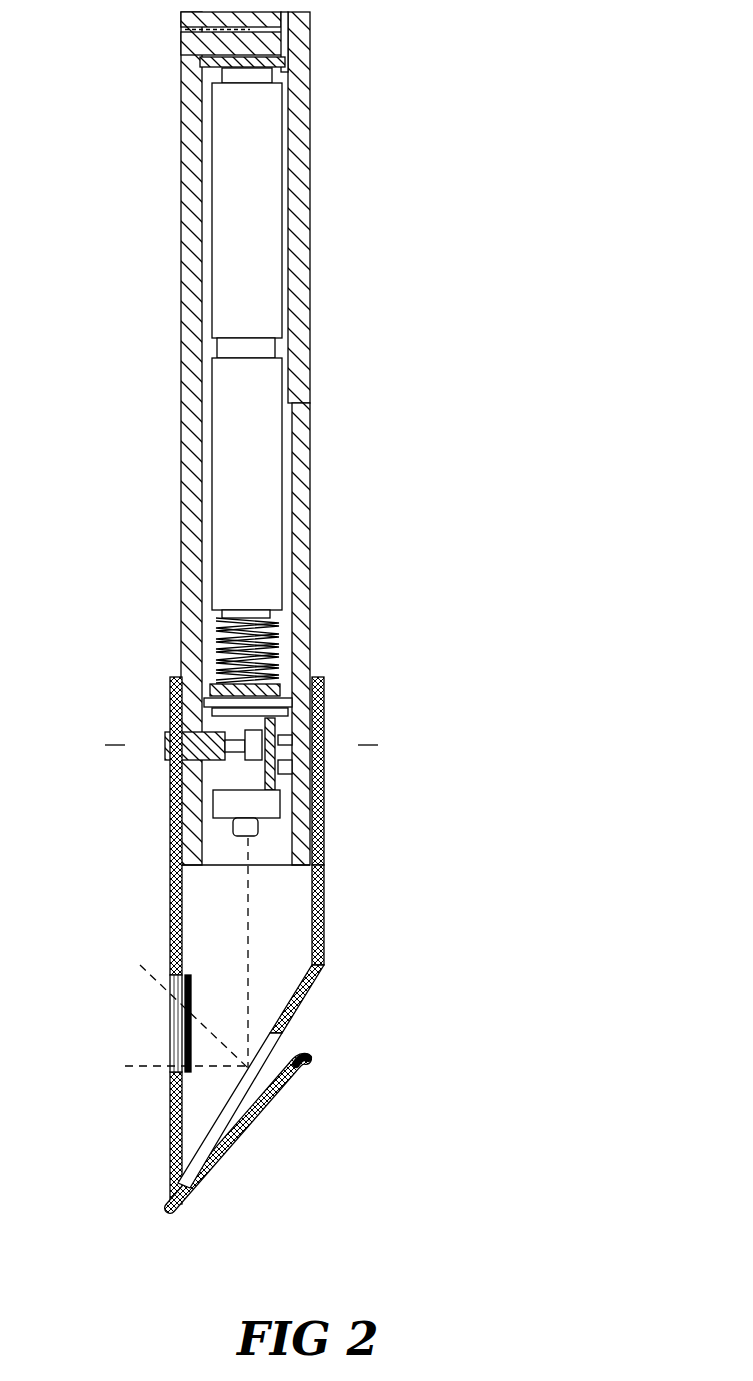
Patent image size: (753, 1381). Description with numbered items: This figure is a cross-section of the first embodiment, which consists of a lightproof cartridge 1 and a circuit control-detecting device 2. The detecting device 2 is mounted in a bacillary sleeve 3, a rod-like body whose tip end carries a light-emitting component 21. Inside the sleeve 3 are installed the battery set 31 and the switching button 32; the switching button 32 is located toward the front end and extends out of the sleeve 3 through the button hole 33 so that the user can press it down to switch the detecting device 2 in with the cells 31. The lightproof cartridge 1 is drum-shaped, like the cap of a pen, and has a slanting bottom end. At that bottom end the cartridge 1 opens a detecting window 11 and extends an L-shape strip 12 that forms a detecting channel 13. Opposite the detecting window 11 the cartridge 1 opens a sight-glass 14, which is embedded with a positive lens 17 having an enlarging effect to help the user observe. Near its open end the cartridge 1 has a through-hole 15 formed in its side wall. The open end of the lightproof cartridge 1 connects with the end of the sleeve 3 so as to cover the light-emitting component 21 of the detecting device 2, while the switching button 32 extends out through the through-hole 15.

The lightproof cartridge 1 is at (422, 1068).
The circuit control-detecting device 2 is at (322, 680).
The bacillary sleeve 3 is at (181, 478).
The detecting window 11 is at (265, 1095).
The L-shape strip 12 is at (222, 1160).
The detecting channel 13 is at (282, 1048).
The sight-glass 14 is at (172, 1030).
The through-hole 15 is at (172, 762).
The positive lens 17 is at (172, 992).
The light-emitting component 21 is at (325, 875).
The battery set 31 is at (262, 258).
The switching button 32 is at (168, 750).
The button hole 33 is at (172, 725).